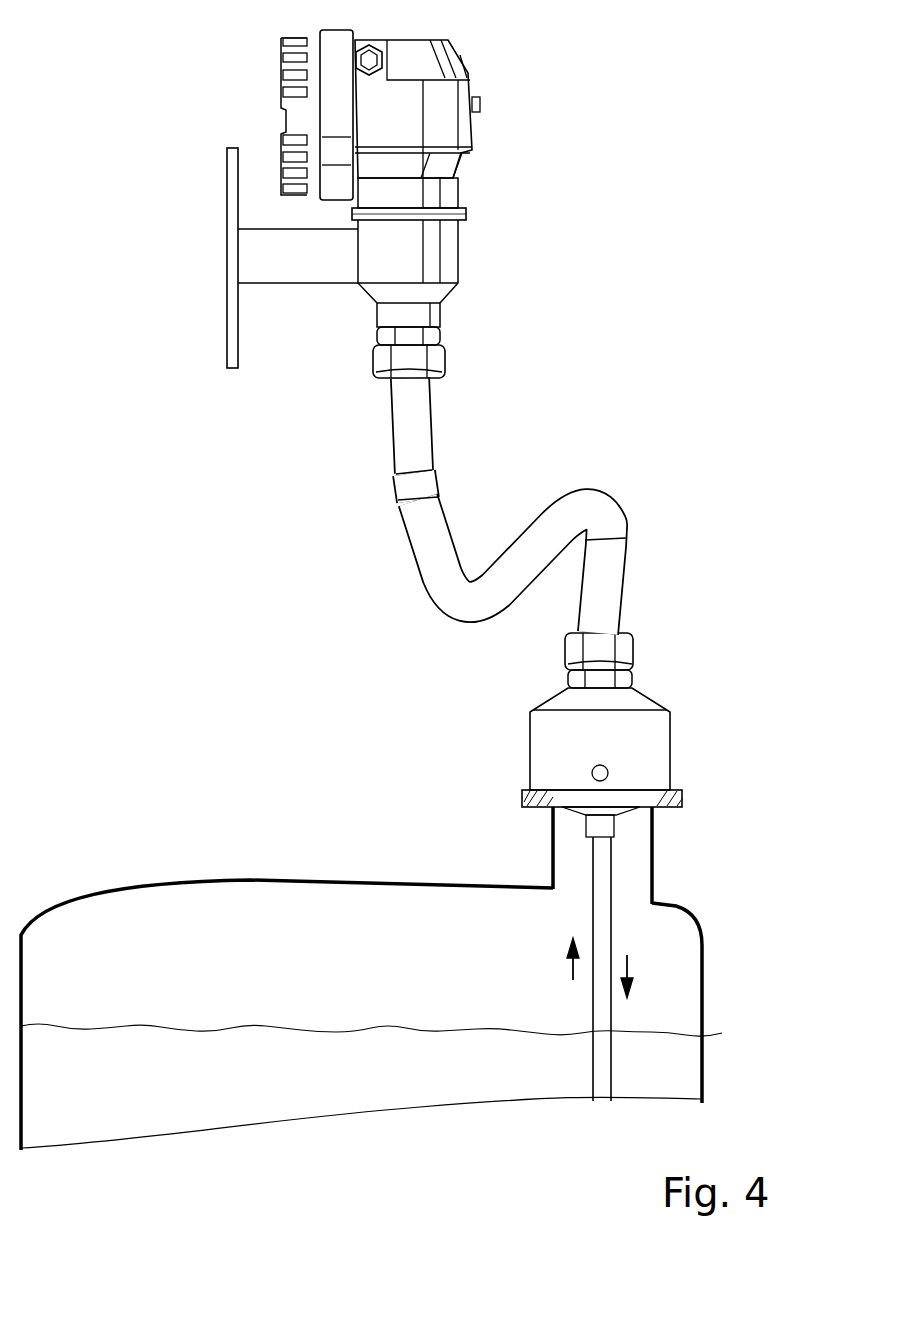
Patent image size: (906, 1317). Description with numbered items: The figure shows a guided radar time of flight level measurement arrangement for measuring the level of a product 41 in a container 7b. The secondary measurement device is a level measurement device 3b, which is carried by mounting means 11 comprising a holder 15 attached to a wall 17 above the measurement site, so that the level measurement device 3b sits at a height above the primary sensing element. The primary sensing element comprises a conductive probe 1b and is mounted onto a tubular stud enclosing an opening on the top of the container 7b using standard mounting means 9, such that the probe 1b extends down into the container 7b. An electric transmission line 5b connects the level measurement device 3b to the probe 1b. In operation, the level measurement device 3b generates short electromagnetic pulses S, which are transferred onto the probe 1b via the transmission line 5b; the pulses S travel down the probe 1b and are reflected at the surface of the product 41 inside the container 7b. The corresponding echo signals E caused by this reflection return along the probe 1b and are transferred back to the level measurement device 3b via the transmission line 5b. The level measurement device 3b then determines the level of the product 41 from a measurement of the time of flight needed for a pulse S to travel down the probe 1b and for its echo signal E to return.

The mounting means 11 is at (246, 213).
The holder 15 is at (228, 185).
The wall 17 is at (297, 268).
The level measurement device 3b is at (414, 135).
The electric transmission line 5b is at (410, 552).
The mounting means 9 is at (534, 801).
The container 7b is at (490, 874).
The conductive probe 1b is at (603, 1013).
The product 41 is at (319, 1086).
The echo signals E is at (571, 962).
The electromagnetic pulses S is at (628, 963).